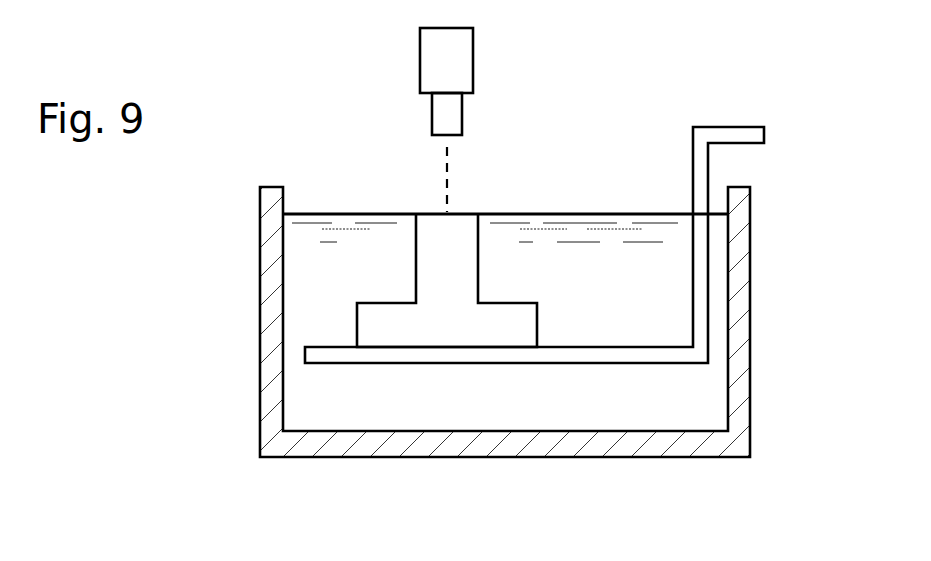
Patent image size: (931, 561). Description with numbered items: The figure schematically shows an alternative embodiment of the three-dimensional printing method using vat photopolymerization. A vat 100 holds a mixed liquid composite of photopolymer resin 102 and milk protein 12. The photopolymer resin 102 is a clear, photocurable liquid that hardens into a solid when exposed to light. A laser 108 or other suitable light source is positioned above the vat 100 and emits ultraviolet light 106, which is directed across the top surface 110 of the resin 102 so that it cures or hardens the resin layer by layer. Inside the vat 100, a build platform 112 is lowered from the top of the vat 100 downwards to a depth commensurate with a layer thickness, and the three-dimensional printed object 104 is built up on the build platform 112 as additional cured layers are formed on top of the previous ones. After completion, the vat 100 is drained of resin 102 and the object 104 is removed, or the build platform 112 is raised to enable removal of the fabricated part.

The vat 100 is at (743, 310).
The milk protein 12 is at (399, 262).
The photopolymer resin 102 is at (300, 278).
The top surface 110 is at (340, 213).
The three-dimensional printed object 104 is at (489, 330).
The build platform 112 is at (610, 350).
The laser 108 is at (465, 58).
The ultraviolet light 106 is at (447, 170).